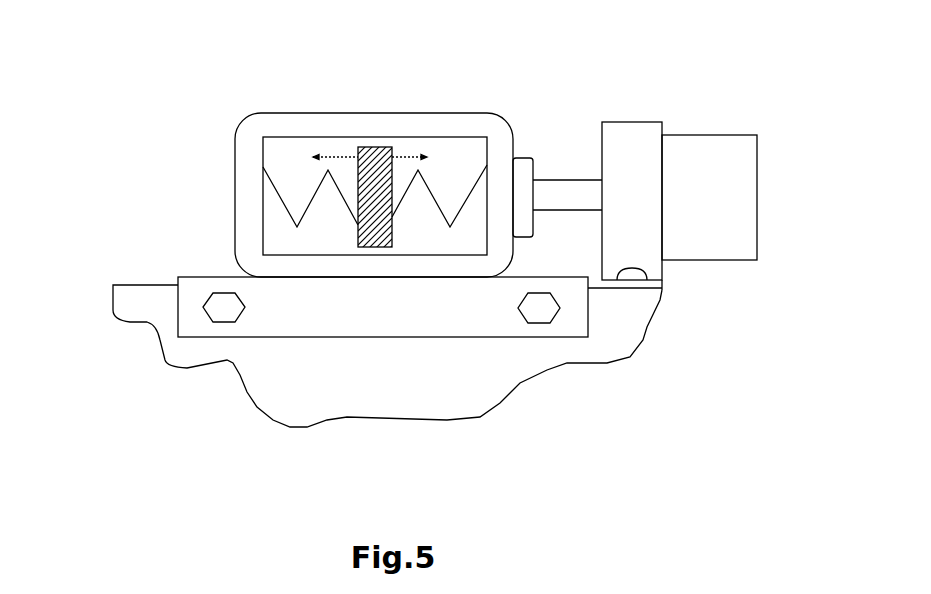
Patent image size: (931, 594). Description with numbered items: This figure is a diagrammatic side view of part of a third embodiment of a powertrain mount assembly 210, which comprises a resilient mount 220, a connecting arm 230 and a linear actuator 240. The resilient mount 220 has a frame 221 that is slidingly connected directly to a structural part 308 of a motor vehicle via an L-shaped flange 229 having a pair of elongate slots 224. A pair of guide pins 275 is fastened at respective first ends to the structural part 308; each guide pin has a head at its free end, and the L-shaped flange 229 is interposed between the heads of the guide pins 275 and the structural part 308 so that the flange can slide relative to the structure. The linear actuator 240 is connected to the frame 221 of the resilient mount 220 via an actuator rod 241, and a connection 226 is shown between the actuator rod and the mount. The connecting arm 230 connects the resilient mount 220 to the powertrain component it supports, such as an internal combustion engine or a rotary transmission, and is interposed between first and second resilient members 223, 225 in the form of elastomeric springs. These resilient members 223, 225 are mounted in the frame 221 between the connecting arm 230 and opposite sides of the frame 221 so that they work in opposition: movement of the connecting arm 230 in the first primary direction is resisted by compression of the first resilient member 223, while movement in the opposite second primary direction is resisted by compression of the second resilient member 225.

The powertrain mount assembly 210 is at (292, 146).
The resilient mount 220 is at (283, 146).
The frame 221 is at (338, 113).
The first resilient member 223 is at (290, 120).
The second resilient member 225 is at (443, 120).
The connecting arm 230 is at (373, 147).
The actuator rod 241 is at (558, 180).
The linear actuator 240 is at (626, 112).
The connector 226 is at (579, 309).
The L-shaped flange 229 is at (330, 263).
The guide pins 275 is at (321, 395).
The elongate slots 224 is at (533, 323).
The structural part 308 is at (240, 393).